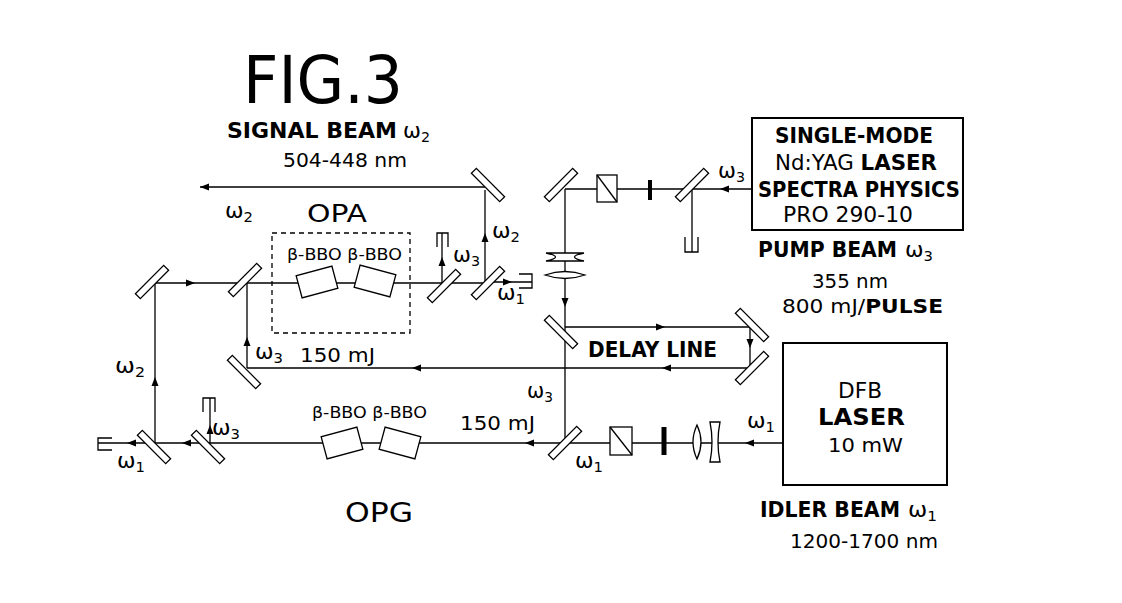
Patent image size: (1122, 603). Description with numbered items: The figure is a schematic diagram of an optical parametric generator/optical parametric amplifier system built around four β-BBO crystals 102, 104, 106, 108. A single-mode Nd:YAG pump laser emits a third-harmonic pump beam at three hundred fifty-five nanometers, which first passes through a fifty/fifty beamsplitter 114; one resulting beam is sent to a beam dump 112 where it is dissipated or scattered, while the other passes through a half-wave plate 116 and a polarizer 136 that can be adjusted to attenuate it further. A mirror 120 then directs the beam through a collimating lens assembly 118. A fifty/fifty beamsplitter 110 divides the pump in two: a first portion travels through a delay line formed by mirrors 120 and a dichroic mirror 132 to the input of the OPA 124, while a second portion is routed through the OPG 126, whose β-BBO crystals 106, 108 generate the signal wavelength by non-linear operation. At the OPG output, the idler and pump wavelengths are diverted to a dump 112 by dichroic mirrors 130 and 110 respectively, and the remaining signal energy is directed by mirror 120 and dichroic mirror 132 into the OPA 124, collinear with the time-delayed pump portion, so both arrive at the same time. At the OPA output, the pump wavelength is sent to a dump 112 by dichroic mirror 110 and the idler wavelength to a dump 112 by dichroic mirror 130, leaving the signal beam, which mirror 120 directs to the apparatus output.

The β-BBO crystal 102 is at (314, 298).
The β-BBO crystal 104 is at (376, 297).
The β-BBO crystal 106 is at (340, 459).
The β-BBO crystal 108 is at (402, 459).
The 50/50 beamsplitter / dichroic mirror 110 is at (399, 380).
The beam dump 112 is at (389, 347).
The 50/50 beamsplitter 114 is at (694, 171).
The half-wave plate 116 is at (660, 315).
The collimating lens assembly 118 is at (636, 371).
The mirror 120 is at (477, 279).
The optical parametric amplifier (OPA) 124 is at (378, 214).
The optical parametric generator (OPG) 126 is at (335, 509).
The dichroic mirror 130 is at (322, 379).
The dichroic mirror 132 is at (242, 269).
The polarizer 136 is at (615, 316).